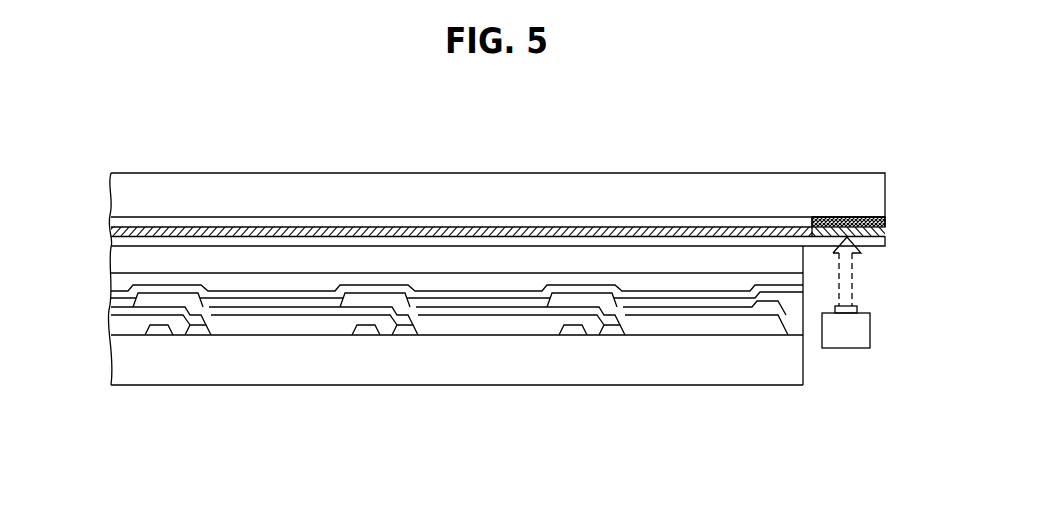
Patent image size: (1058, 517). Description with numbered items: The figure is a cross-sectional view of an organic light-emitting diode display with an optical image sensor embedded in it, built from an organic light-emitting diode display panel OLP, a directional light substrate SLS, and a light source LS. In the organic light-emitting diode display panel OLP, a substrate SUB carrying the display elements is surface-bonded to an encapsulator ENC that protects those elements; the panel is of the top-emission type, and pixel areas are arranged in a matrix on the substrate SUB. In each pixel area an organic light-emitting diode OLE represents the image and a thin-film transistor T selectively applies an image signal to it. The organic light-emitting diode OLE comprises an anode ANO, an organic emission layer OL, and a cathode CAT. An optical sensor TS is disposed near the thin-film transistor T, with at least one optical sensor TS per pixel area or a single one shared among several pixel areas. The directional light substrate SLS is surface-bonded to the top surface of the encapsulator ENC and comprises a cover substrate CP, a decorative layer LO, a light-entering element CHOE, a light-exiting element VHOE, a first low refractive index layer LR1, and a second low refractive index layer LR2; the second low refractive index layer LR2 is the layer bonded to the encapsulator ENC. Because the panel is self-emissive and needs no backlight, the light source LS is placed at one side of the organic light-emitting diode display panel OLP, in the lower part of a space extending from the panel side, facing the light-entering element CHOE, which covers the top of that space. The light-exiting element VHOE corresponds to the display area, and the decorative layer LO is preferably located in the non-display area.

The directional light substrate SLS is at (528, 164).
The cover substrate CP is at (598, 191).
The first low refractive index layer LR1 is at (690, 222).
The light-exiting element VHOE is at (763, 236).
The second low refractive index layer LR2 is at (800, 243).
The light-entering element CHOE is at (862, 226).
The decorative layer LO is at (882, 222).
The light source LS is at (846, 292).
The organic light-emitting diode display panel OLP is at (423, 368).
The substrate SUB is at (270, 372).
The optical sensor TS is at (158, 330).
The thin-film transistor T is at (200, 330).
The encapsulator ENC is at (472, 264).
The organic light-emitting diode OLE is at (457, 388).
The anode ANO is at (657, 312).
The organic emission layer OL is at (700, 303).
The cathode CAT is at (732, 295).